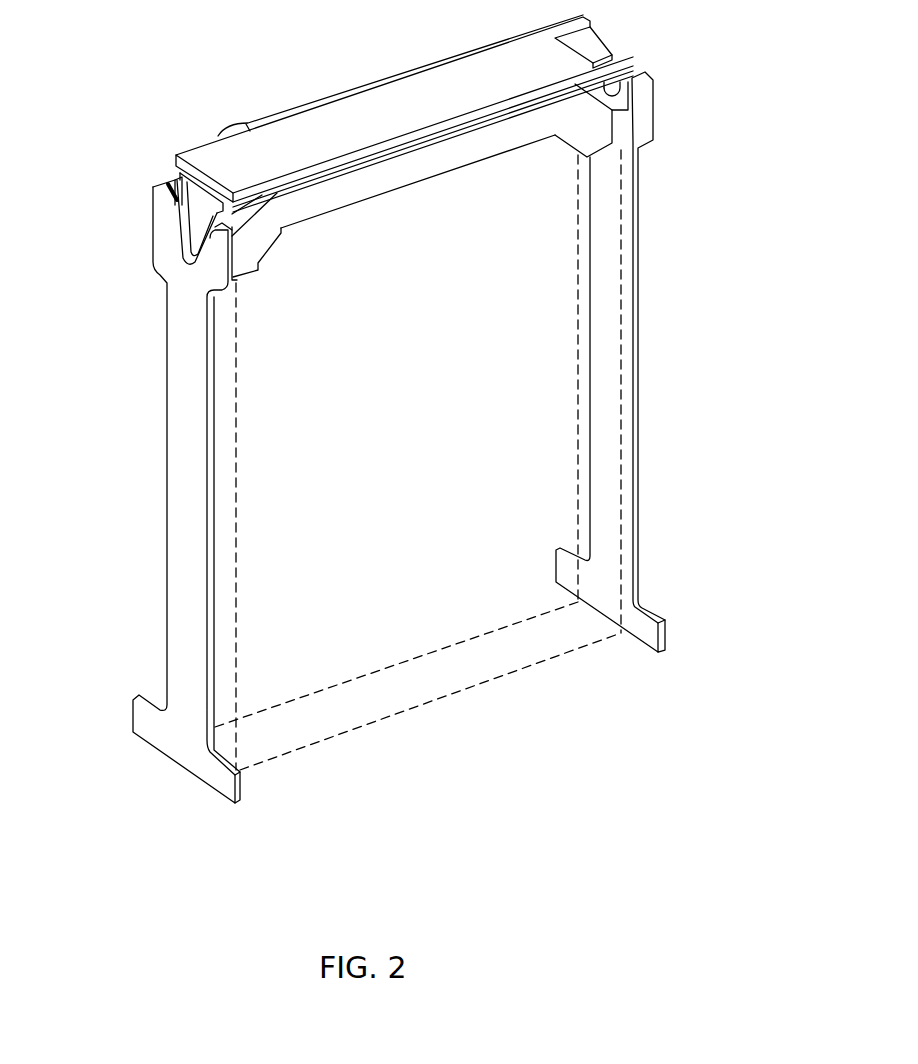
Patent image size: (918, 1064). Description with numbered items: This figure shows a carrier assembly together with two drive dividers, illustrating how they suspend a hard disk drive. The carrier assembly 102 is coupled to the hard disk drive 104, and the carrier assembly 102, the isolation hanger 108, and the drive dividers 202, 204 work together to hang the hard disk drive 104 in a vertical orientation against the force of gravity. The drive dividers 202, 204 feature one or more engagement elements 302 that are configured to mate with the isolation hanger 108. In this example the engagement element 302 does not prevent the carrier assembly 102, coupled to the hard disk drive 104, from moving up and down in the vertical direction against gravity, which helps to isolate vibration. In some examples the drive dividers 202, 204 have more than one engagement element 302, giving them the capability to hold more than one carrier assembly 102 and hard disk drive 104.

The carrier assembly 102 is at (378, 110).
The hard disk drive 104 is at (541, 333).
The isolation hanger 108 is at (193, 220).
The drive divider 202 is at (178, 423).
The drive divider 204 is at (652, 122).
The engagement element 302 is at (175, 195).